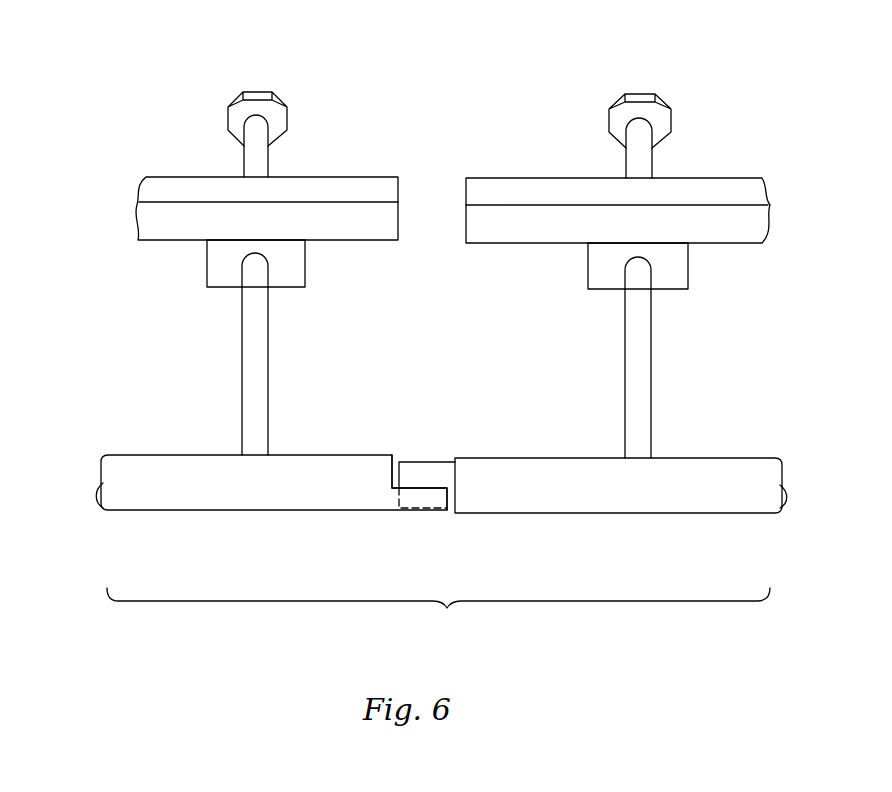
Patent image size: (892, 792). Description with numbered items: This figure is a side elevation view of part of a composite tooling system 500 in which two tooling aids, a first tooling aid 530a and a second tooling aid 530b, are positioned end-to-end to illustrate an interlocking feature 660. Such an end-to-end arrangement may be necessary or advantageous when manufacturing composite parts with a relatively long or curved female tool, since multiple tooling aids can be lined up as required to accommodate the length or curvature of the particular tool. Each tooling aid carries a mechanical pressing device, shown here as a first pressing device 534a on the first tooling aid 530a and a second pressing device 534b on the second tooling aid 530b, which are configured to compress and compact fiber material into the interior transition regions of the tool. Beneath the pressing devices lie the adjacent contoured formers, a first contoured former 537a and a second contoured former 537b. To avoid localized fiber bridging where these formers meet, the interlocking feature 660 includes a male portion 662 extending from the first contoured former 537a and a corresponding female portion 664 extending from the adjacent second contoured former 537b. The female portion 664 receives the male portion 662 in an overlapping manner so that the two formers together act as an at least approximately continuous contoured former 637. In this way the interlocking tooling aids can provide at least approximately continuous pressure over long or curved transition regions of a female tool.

The composite tooling system 500 is at (514, 45).
The first tooling aid 530a is at (517, 187).
The second tooling aid 530b is at (342, 184).
The first pressing device 534a is at (651, 358).
The second pressing device 534b is at (268, 354).
The first contoured former 537a is at (728, 458).
The second contoured former 537b is at (150, 455).
The continuous contoured former 637 is at (435, 515).
The interlocking feature 660 is at (419, 468).
The male portion 662 is at (433, 462).
The female portion 664 is at (430, 512).